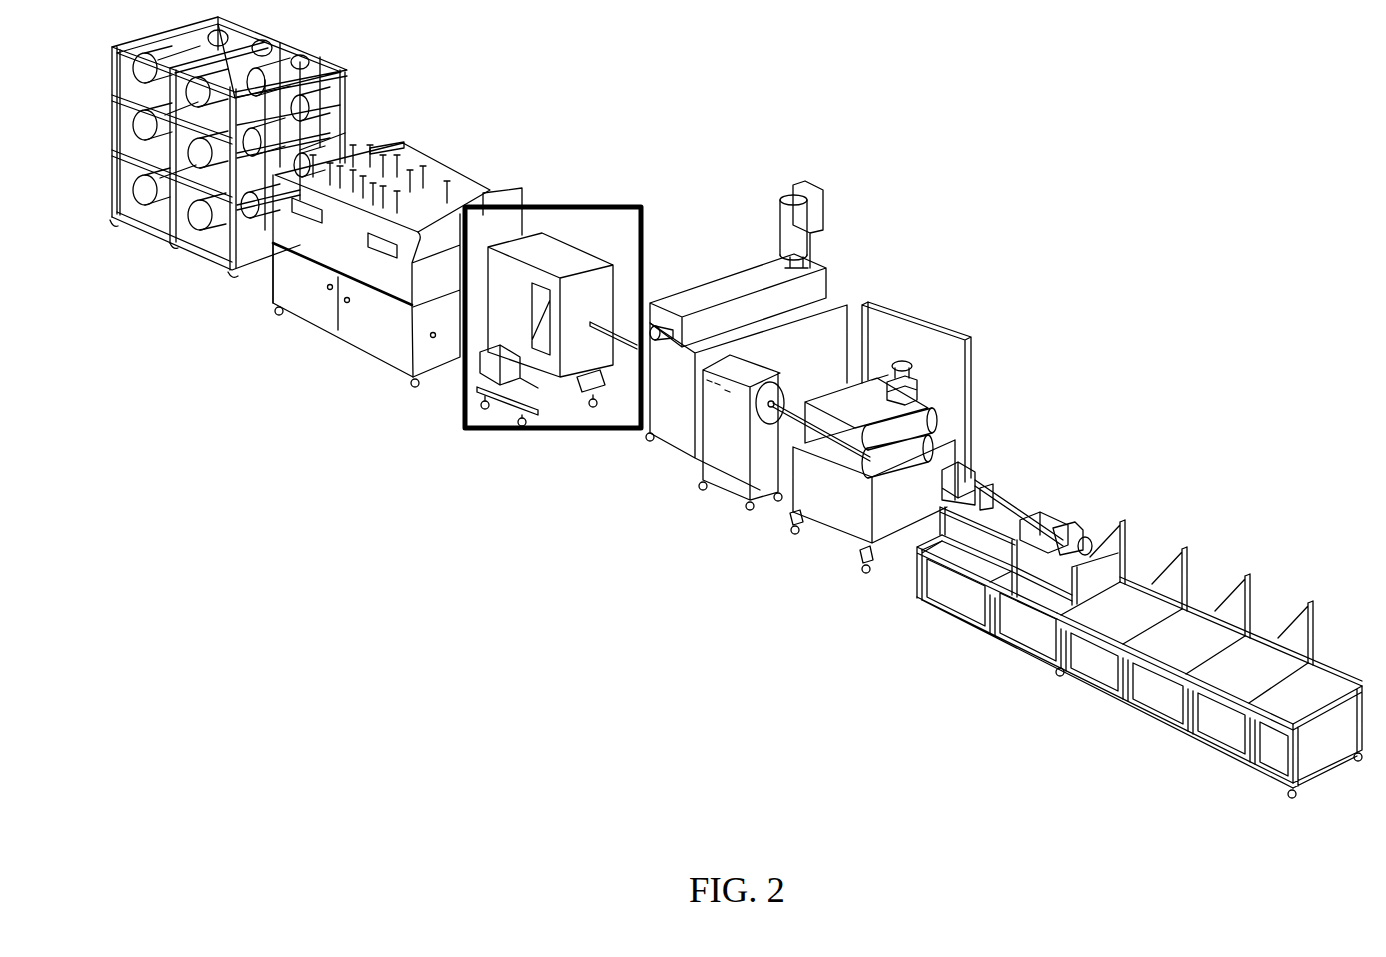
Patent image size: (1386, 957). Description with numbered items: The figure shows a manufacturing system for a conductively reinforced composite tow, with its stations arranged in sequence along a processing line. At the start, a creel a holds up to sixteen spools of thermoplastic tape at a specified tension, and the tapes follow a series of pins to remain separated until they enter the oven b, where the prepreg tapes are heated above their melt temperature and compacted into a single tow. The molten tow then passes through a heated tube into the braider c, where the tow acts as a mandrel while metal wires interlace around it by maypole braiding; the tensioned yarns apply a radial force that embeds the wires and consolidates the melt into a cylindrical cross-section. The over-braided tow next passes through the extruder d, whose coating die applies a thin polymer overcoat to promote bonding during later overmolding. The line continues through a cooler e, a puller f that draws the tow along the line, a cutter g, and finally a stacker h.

The creel a is at (225, 166).
The oven b is at (397, 280).
The braider c is at (545, 357).
The extruder d is at (722, 354).
The cooler e is at (782, 471).
The puller f is at (880, 472).
The cutter g is at (1017, 588).
The stacker h is at (1139, 663).